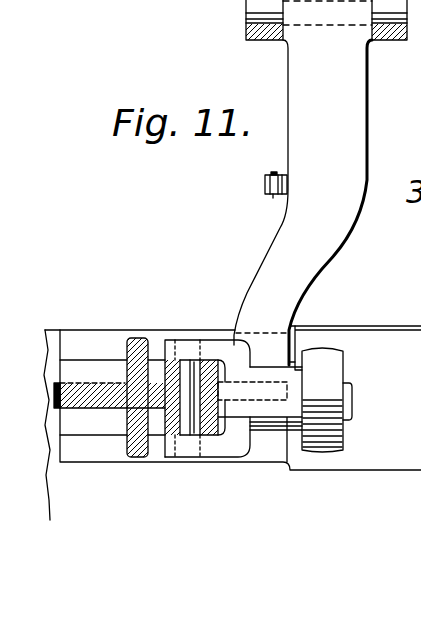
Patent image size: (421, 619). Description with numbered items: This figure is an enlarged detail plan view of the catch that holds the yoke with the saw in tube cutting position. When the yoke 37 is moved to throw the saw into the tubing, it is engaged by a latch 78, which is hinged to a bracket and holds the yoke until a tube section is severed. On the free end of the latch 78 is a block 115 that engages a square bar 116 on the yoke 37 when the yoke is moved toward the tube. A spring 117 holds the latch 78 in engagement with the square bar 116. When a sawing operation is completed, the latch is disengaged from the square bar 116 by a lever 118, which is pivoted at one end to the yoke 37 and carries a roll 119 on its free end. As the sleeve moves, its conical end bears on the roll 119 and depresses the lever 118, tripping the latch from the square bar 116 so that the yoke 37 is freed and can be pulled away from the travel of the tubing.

The yoke 37 is at (137, 338).
The latch 78 is at (320, 182).
The block 115 is at (281, 360).
The square bar 116 is at (270, 388).
The spring 117 is at (275, 196).
The lever 118 is at (224, 318).
The roll 119 is at (340, 361).